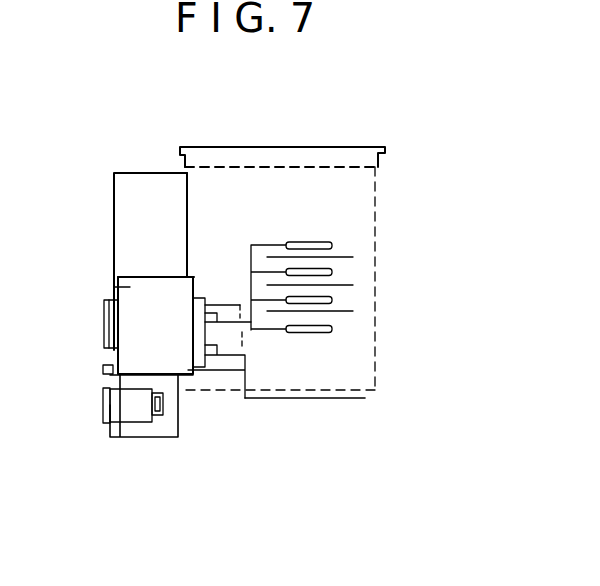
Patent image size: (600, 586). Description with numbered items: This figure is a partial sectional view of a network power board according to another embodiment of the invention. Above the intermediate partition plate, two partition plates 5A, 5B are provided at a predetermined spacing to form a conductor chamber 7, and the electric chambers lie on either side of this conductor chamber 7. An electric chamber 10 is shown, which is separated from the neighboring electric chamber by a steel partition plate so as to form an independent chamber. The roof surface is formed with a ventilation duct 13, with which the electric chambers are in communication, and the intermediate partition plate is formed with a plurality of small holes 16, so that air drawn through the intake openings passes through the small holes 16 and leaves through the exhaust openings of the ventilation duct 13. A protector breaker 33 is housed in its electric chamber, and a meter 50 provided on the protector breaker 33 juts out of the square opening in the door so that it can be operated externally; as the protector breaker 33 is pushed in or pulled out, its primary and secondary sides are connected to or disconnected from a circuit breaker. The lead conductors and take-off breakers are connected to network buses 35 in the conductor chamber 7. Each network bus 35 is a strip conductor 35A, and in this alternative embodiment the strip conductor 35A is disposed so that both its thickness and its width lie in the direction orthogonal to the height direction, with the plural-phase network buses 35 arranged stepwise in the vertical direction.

The conductor chamber 7 is at (345, 182).
The ventilation duct 13 is at (290, 163).
The electric chamber 10 is at (131, 216).
The partition plate 5A is at (184, 204).
The partition plate 5B is at (374, 200).
The protector breaker 33 is at (125, 290).
The meter 50 is at (104, 330).
The network bus 35 is at (310, 345).
The strip conductor 35A is at (333, 245).
The small holes 16 is at (218, 392).